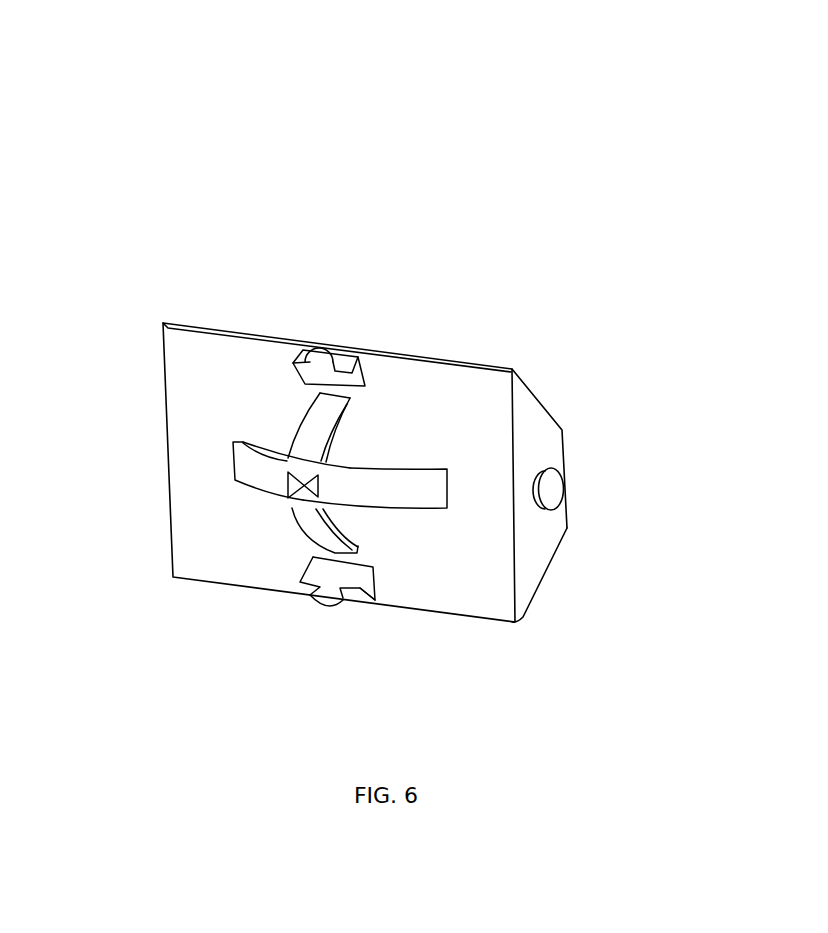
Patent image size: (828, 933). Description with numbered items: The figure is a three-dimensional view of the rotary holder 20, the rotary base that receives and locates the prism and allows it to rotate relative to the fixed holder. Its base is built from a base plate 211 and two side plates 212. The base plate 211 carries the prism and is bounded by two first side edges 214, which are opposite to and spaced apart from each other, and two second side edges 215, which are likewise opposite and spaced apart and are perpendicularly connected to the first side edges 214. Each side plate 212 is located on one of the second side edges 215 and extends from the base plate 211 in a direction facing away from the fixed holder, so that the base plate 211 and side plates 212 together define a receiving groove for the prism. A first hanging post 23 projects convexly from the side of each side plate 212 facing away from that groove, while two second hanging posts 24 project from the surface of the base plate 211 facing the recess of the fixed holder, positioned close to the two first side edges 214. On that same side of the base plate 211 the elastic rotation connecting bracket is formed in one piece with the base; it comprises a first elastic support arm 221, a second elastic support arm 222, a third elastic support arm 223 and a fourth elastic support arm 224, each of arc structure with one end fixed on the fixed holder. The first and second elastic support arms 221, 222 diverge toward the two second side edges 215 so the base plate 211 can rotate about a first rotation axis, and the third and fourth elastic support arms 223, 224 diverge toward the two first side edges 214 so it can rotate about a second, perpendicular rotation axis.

The rotary holder 20 is at (398, 68).
The base plate 211 is at (483, 587).
The side plate 212 is at (538, 424).
The first side edge 214 is at (404, 352).
The second side edge 215 is at (517, 568).
The first hanging post 23 is at (550, 487).
The second hanging post 24 is at (317, 353).
The first elastic support arm 221 is at (253, 477).
The second elastic support arm 222 is at (420, 485).
The third elastic support arm 223 is at (312, 527).
The fourth elastic support arm 224 is at (310, 440).